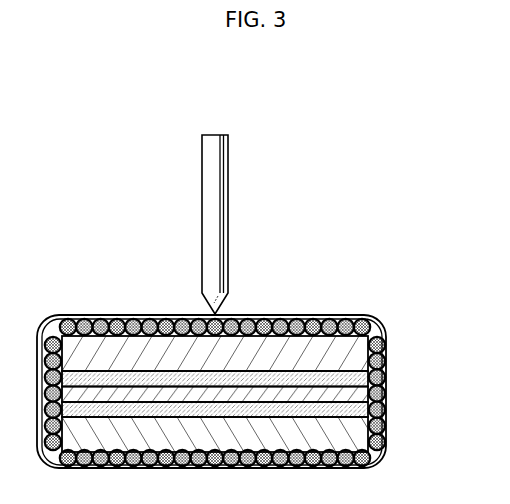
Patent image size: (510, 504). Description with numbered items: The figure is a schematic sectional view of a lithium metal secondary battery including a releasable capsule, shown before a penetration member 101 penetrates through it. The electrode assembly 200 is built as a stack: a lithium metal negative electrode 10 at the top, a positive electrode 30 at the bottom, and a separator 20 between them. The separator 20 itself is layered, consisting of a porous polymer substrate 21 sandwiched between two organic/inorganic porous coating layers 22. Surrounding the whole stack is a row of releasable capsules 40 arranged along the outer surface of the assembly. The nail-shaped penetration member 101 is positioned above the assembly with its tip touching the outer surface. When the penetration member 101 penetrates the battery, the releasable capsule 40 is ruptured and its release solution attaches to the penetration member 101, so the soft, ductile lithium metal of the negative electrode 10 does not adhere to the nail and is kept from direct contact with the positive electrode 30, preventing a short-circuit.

The electrode assembly 200 is at (113, 97).
The penetration member 101 is at (228, 204).
The releasable capsule 40 is at (313, 326).
The lithium metal negative electrode 10 is at (247, 350).
The separator 20 is at (433, 362).
The organic/inorganic porous coating layer 22 is at (247, 393).
The porous polymer substrate 21 is at (247, 393).
The positive electrode 30 is at (247, 436).